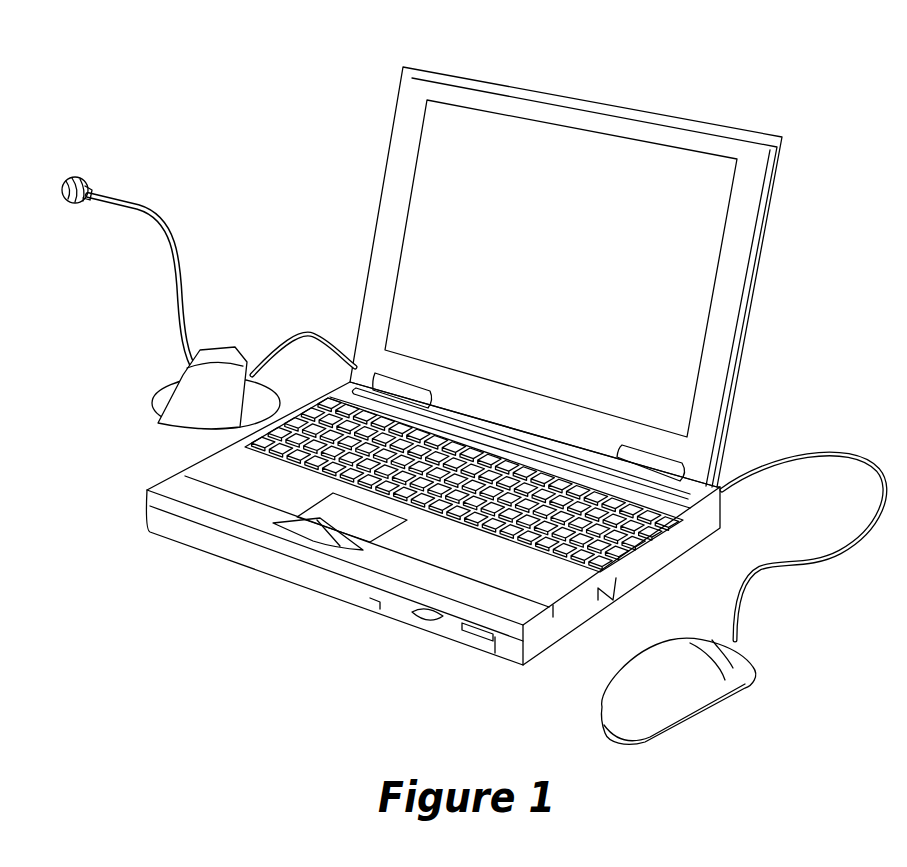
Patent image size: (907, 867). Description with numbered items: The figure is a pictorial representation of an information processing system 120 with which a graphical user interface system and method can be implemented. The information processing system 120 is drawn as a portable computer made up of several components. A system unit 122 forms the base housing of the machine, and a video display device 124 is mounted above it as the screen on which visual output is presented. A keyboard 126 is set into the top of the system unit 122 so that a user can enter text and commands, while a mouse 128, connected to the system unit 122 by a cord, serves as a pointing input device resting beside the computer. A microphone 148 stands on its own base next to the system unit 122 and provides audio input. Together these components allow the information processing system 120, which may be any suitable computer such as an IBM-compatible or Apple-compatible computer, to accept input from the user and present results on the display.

The information processing system 120 is at (493, 383).
The system unit 122 is at (705, 468).
The video display device 124 is at (664, 175).
The keyboard 126 is at (368, 467).
The mouse 128 is at (700, 700).
The microphone 148 is at (150, 208).